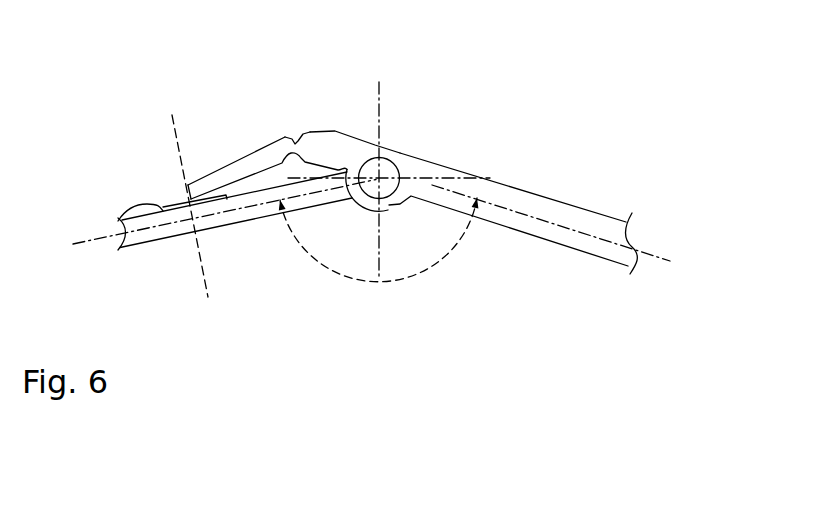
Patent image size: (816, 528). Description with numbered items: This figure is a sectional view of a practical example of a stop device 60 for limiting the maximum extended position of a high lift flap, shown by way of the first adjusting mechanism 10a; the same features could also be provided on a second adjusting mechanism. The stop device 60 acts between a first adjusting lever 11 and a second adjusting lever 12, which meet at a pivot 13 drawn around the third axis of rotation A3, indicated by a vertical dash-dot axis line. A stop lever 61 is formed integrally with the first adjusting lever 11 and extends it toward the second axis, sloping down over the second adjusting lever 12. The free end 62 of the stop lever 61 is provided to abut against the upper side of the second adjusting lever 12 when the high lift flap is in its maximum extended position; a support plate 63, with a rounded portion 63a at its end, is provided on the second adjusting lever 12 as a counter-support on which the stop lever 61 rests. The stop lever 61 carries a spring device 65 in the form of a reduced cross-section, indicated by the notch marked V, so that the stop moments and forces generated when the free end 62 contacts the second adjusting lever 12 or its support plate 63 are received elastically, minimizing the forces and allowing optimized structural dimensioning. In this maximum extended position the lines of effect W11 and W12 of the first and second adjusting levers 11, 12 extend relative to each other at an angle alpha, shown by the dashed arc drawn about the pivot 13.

The first adjusting mechanism 10a is at (210, 68).
The stop device 60 is at (478, 98).
The stop lever 61 is at (229, 143).
The free end 62 is at (182, 184).
The support plate 63 is at (149, 190).
The rounded portion 63a is at (118, 221).
The spring device 65 is at (299, 118).
The notch direction V is at (296, 143).
The third axis of rotation A3 is at (408, 133).
The first adjusting lever 11 is at (598, 252).
The second adjusting lever 12 is at (139, 244).
The pivot joint 13 is at (387, 189).
The line of effect of the first adjusting lever W11 is at (572, 228).
The line of effect of the second adjusting lever W12 is at (168, 227).